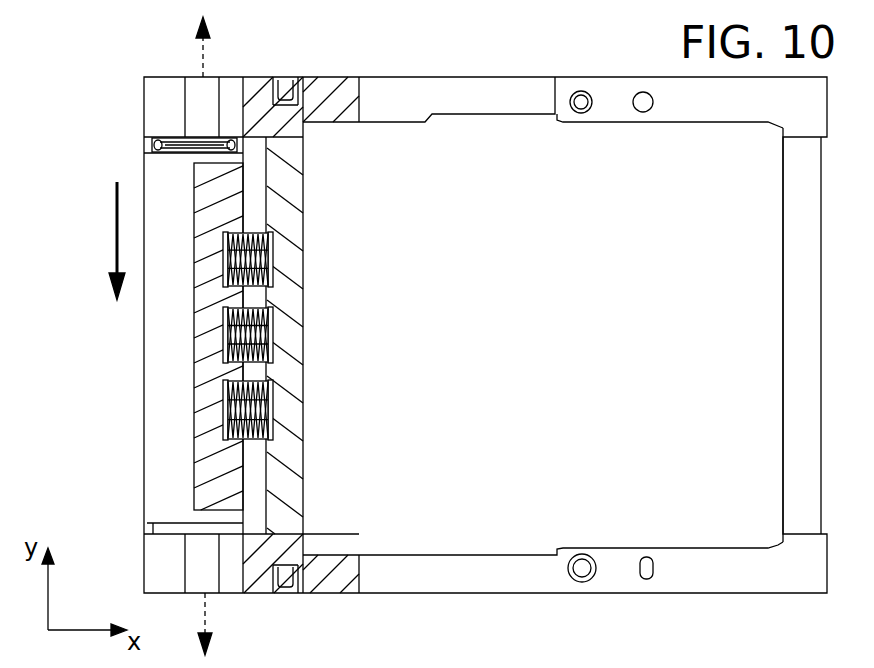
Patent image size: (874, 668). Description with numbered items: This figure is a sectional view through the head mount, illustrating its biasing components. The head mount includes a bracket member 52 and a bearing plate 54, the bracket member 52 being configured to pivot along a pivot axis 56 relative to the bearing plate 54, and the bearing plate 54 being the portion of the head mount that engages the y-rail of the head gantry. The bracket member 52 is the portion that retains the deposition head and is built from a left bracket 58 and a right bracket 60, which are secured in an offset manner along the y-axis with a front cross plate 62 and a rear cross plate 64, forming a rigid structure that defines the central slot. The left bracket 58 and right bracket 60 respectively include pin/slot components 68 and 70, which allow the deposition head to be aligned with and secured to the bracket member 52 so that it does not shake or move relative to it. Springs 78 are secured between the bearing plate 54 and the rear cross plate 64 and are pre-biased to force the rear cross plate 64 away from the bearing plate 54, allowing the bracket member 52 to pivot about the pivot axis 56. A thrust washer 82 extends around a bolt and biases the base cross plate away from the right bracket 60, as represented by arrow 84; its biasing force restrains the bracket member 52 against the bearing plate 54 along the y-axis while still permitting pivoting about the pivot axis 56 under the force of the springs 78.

The bracket member 52 is at (562, 604).
The bearing plate 54 is at (205, 408).
The pivot axis 56 is at (203, 62).
The left bracket 58 is at (467, 558).
The right bracket 60 is at (460, 107).
The front cross plate 62 is at (772, 283).
The rear cross plate 64 is at (300, 290).
The pin/slot components 68 is at (586, 540).
The pin/slot components 70 is at (590, 122).
The springs 78 is at (203, 271).
The thrust washer 82 is at (138, 147).
The arrow 84 is at (110, 242).